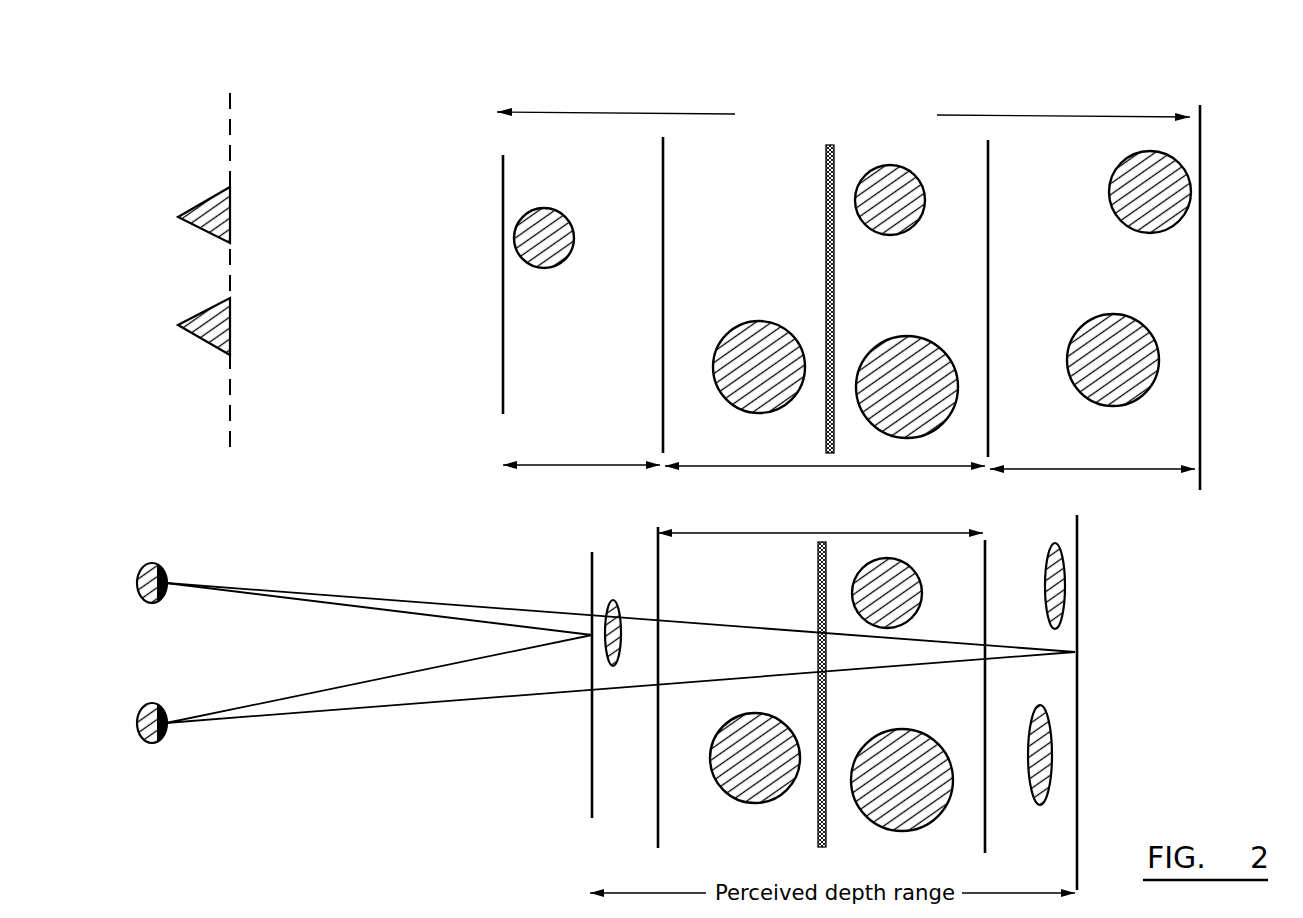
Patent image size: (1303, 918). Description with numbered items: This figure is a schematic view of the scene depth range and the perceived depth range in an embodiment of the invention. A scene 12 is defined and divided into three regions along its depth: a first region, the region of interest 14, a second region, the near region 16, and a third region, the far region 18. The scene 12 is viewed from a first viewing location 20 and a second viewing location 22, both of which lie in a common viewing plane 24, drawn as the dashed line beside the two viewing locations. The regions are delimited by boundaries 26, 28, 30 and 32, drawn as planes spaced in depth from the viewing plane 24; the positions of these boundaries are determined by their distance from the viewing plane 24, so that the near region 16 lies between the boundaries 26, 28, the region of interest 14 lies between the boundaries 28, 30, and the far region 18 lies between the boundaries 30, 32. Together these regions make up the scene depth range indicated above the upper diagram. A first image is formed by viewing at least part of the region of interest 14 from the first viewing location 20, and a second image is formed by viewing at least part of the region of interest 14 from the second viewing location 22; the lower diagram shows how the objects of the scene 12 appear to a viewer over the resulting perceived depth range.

The scene 12 is at (850, 271).
The region of interest 14 is at (665, 99).
The near region 16 is at (660, 93).
The far region 18 is at (1090, 72).
The first viewing location 20 is at (206, 338).
The second viewing location 22 is at (206, 208).
The viewing plane 24 is at (231, 398).
The boundary 26 is at (503, 358).
The boundary 28 is at (663, 358).
The boundary 30 is at (989, 410).
The boundary 32 is at (1201, 414).